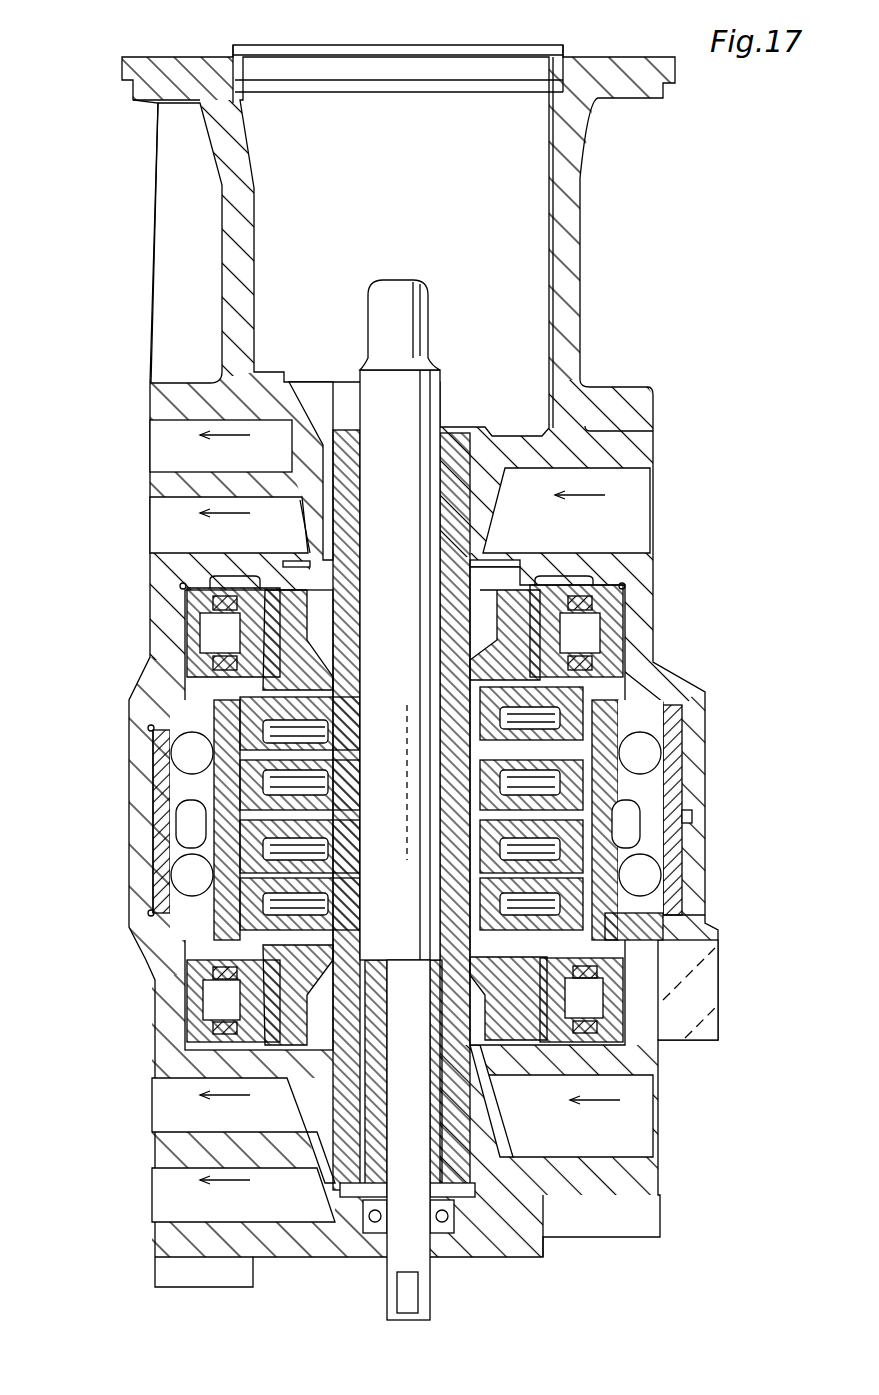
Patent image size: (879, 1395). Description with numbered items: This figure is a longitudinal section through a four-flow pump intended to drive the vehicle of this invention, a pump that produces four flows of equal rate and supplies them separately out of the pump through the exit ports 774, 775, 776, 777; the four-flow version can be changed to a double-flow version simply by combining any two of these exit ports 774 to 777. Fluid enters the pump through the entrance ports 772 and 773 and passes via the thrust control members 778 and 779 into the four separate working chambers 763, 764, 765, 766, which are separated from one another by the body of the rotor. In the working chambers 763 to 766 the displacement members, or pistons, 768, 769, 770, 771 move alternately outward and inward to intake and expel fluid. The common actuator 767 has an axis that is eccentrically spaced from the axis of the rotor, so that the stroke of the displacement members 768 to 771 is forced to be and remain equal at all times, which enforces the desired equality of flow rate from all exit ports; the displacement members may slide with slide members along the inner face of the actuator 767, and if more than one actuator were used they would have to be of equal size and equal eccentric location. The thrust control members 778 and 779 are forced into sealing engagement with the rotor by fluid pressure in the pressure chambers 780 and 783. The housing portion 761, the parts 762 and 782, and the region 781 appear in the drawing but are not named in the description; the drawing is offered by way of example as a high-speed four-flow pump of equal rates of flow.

The housing 761 is at (640, 455).
The bearing 762 is at (527, 650).
The working chamber 763 is at (437, 697).
The working chamber 764 is at (437, 770).
The working chamber 765 is at (437, 857).
The working chamber 766 is at (437, 913).
The actuator 767 is at (620, 795).
The displacement member 768 is at (577, 708).
The displacement member 769 is at (600, 765).
The displacement member 770 is at (600, 828).
The displacement member 771 is at (620, 905).
The entrance port 772 is at (640, 1135).
The entrance port 773 is at (640, 540).
The exit port 774 is at (165, 460).
The exit port 775 is at (165, 528).
The exit port 776 is at (175, 1118).
The exit port 777 is at (180, 1208).
The thrust control member 778 is at (378, 1018).
The thrust control member 779 is at (343, 590).
The pressure chamber 780 is at (510, 1075).
The passage 781 is at (315, 1160).
The lip seal 782 is at (500, 567).
The pressure chamber 783 is at (330, 500).